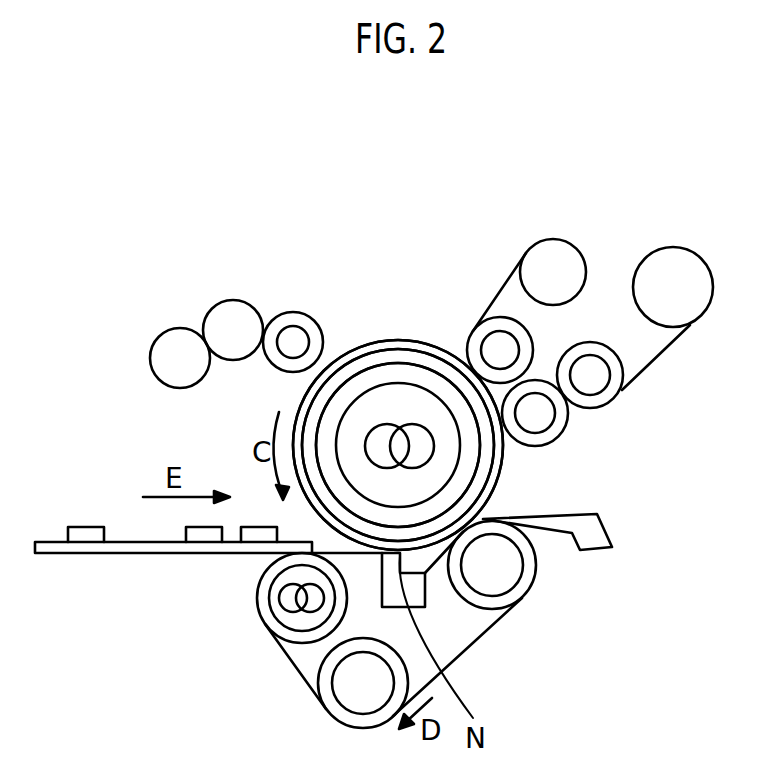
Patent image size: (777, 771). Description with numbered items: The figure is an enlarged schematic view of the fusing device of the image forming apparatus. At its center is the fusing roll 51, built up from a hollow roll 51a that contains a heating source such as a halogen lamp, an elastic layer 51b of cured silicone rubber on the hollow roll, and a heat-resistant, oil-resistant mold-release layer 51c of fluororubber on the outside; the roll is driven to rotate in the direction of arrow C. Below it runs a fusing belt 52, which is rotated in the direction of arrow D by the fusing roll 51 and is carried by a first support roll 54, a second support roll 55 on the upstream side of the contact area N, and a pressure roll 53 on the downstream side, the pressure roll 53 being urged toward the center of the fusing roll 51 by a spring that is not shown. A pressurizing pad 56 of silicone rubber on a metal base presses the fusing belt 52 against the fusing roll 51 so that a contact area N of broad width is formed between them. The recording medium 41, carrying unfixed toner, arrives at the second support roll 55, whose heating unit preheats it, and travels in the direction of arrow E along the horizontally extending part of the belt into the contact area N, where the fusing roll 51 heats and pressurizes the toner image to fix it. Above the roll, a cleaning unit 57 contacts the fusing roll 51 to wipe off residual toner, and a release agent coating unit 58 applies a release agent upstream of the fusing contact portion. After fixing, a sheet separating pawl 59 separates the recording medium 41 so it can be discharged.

The recording medium 41 is at (80, 555).
The fusing roll 51 is at (505, 468).
The hollow roll 51a is at (432, 382).
The elastic layer 51b is at (400, 355).
The mold-release layer 51c is at (373, 348).
The fusing belt 52 is at (487, 633).
The pressure roll 53 is at (530, 577).
The first support roll 54 is at (322, 697).
The second support roll 55 is at (258, 597).
The pressurizing pad 56 is at (415, 590).
The cleaning unit 57 is at (588, 312).
The release agent coating unit 58 is at (312, 259).
The sheet separating pawl 59 is at (605, 530).